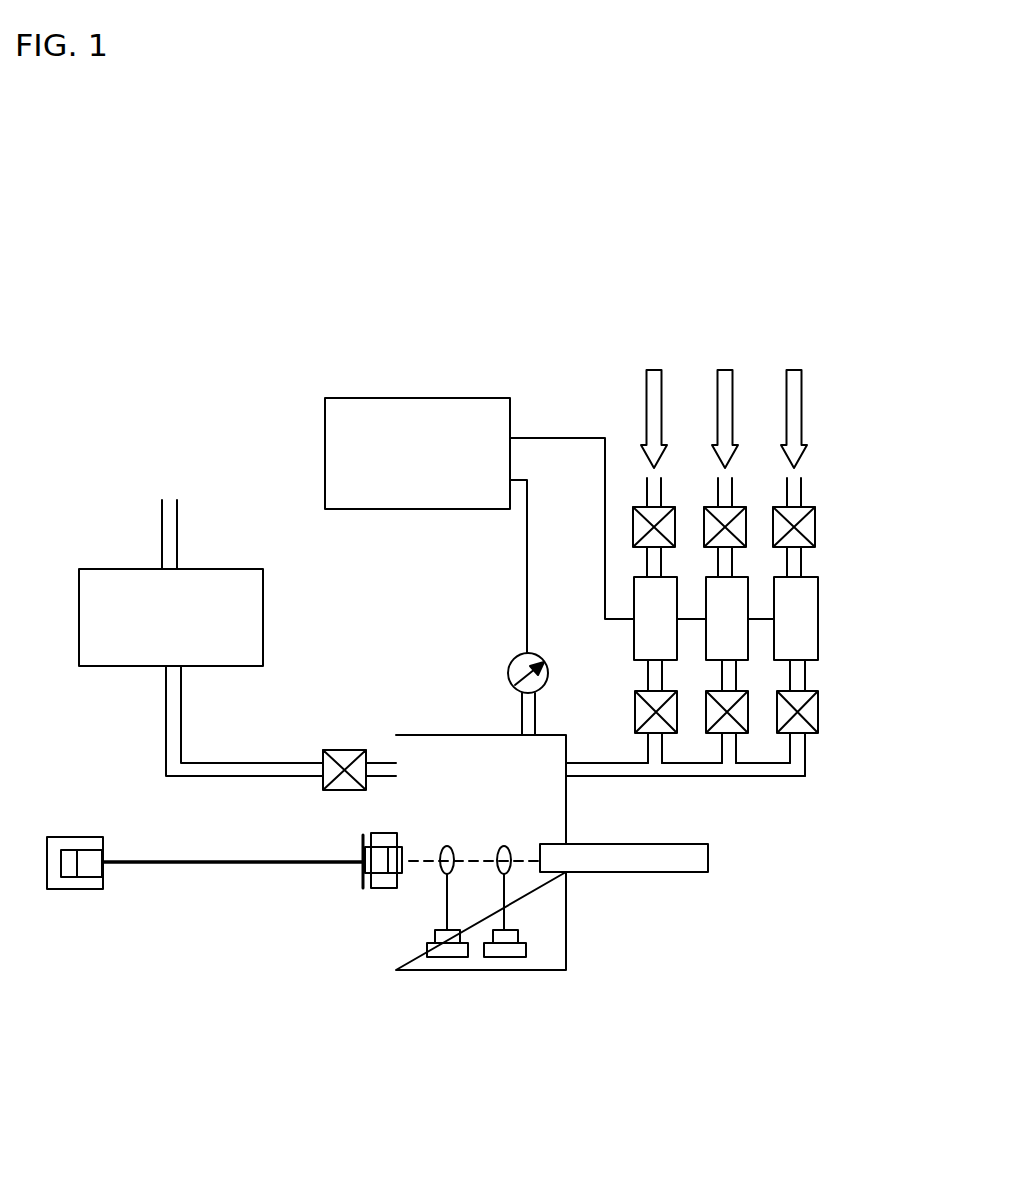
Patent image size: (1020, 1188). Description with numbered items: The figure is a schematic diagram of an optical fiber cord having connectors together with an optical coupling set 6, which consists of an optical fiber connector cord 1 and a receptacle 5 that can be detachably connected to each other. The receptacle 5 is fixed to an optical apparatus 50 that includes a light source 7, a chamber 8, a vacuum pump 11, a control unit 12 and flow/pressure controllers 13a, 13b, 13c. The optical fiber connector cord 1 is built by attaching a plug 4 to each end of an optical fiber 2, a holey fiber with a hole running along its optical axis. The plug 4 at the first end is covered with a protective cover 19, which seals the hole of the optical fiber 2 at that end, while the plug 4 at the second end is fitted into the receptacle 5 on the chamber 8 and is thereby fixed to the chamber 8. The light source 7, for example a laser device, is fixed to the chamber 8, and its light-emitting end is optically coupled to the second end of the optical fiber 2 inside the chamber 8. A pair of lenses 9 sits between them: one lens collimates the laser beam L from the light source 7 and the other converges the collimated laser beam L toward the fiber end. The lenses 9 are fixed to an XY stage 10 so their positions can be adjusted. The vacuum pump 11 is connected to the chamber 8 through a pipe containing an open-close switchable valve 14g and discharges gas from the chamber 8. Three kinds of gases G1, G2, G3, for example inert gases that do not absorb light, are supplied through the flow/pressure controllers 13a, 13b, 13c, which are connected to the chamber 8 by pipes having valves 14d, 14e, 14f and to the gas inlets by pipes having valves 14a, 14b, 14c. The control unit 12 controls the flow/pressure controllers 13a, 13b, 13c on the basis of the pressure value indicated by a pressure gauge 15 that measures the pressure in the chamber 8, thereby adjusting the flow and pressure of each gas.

The optical apparatus 50 is at (172, 307).
The optical fiber connector cord 1 is at (224, 908).
The optical fiber 2 is at (233, 898).
The plug 4 is at (100, 870).
The receptacle 5 is at (380, 905).
The optical coupling set 6 is at (297, 930).
The light source 7 is at (673, 873).
The chamber 8 is at (552, 972).
The lenses 9 is at (504, 846).
The XY stage 10 is at (452, 957).
The vacuum pump 11 is at (264, 617).
The control unit 12 is at (453, 396).
The flow/pressure controller 13a is at (638, 630).
The flow/pressure controller 13b is at (748, 632).
The flow/pressure controller 13c is at (818, 596).
The open-close switchable valve 14a is at (634, 521).
The open-close switchable valve 14b is at (736, 508).
The open-close switchable valve 14c is at (816, 515).
The open-close switchable valve 14d is at (635, 715).
The open-close switchable valve 14e is at (749, 712).
The open-close switchable valve 14f is at (819, 705).
The open-close switchable valve 14g is at (343, 750).
The pressure gauge 15 is at (508, 671).
The protective cover 19 is at (65, 891).
The laser beam L is at (415, 853).
The gas G1 is at (662, 388).
The gas G2 is at (733, 388).
The gas G3 is at (802, 388).